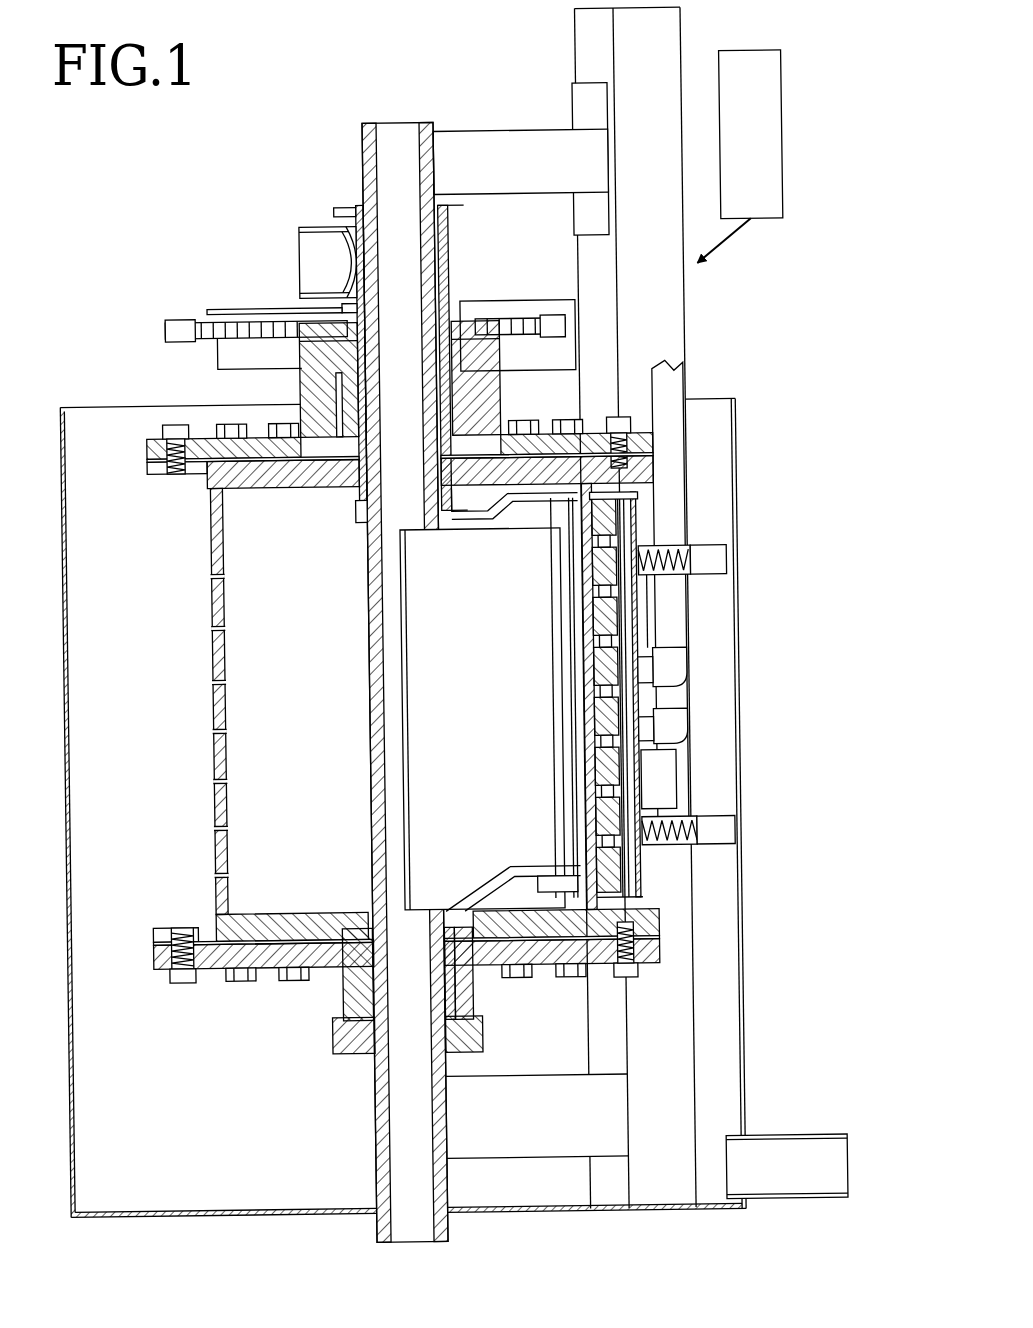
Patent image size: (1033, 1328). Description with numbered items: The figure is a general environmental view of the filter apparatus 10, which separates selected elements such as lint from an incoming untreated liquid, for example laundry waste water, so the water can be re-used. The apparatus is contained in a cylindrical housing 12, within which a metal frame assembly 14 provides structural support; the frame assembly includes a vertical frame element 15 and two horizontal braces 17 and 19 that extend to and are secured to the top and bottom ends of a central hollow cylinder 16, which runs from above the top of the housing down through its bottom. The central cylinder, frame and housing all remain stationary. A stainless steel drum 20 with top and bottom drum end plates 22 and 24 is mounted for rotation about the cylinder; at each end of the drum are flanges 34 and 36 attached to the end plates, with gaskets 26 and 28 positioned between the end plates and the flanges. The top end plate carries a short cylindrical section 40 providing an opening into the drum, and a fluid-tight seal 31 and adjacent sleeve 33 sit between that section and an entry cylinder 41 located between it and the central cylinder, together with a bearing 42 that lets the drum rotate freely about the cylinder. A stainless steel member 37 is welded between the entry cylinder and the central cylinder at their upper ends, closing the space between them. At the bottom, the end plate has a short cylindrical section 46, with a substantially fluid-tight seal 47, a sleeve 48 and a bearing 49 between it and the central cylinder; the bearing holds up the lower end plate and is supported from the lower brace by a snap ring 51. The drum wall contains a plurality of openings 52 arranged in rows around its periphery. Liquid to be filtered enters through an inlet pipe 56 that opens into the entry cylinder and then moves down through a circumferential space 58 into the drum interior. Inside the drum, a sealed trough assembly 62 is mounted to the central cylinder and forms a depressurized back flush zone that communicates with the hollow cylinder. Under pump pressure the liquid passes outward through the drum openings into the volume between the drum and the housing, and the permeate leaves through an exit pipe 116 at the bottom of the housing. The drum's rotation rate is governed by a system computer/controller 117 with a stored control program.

The filter apparatus 10 is at (195, 264).
The housing 12 is at (57, 404).
The frame assembly 14 is at (703, 296).
The vertical frame element 15 is at (690, 374).
The central hollow cylinder 16 is at (369, 150).
The horizontal brace 17 is at (507, 132).
The horizontal brace 19 is at (558, 1148).
The drum 20 is at (204, 606).
The top drum end plate 22 is at (152, 447).
The bottom drum end plate 24 is at (154, 954).
The gasket 26 is at (150, 463).
The gasket 28 is at (153, 934).
The fluid-tight seal 31 is at (322, 386).
The sleeve 33 is at (304, 372).
The flange 34 is at (171, 472).
The flange 36 is at (180, 925).
The stainless steel member 37 is at (361, 207).
The cylindrical section 40 is at (501, 387).
The entry cylinder 41 is at (455, 251).
The bearing 42 is at (471, 322).
The cylindrical section 46 is at (340, 991).
The fluid-tight seal 47 is at (462, 1000).
The sleeve 48 is at (472, 981).
The bearing 49 is at (472, 1026).
The snap ring 51 is at (355, 1051).
The openings 52 is at (226, 670).
The inlet pipe 56 is at (306, 246).
The circumferential space 58 is at (362, 524).
The trough assembly 62 is at (420, 722).
The exit pipe 116 is at (790, 1162).
The system computer/controller 117 is at (760, 55).